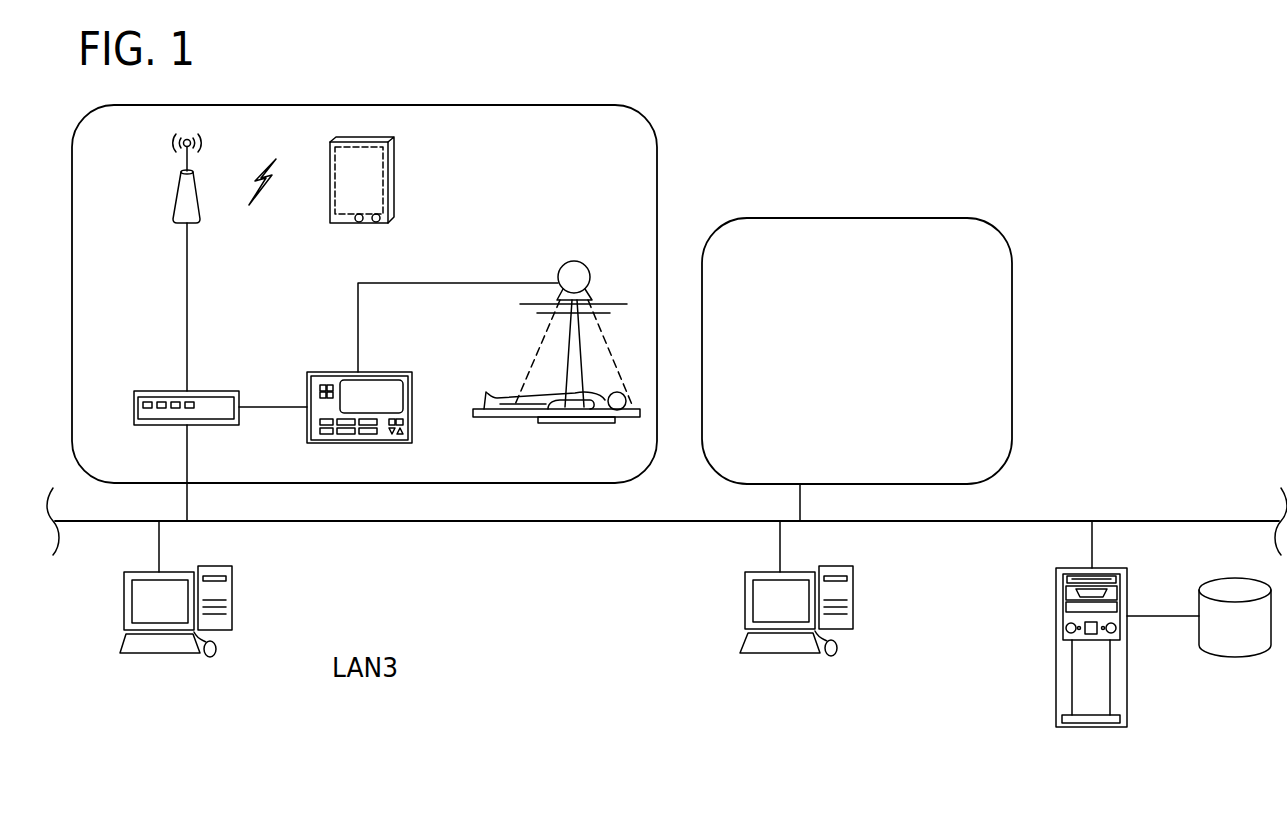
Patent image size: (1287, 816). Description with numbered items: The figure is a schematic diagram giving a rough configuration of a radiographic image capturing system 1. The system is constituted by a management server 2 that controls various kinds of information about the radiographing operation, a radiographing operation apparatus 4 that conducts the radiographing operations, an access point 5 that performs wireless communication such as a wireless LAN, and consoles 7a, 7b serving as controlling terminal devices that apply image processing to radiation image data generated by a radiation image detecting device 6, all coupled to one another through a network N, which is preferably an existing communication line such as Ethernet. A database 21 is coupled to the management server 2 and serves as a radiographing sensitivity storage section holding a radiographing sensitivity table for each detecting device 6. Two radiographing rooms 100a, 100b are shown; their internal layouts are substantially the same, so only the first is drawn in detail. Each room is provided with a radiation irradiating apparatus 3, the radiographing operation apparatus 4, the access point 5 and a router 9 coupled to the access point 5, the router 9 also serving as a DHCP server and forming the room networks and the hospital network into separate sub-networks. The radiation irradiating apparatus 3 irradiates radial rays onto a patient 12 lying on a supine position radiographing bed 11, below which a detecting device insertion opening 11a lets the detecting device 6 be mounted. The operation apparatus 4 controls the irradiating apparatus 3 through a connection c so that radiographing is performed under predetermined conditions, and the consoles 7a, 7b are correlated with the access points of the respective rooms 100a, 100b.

The radiographic image capturing system 1 is at (1112, 191).
The management server 2 is at (1056, 650).
The database 21 is at (1225, 657).
The radiation irradiating apparatus 3 is at (584, 268).
The radiographing operation apparatus 4 is at (330, 372).
The access point 5 is at (173, 197).
The radiation image detecting device 6 is at (394, 156).
The console 7a is at (124, 600).
The console 7b is at (745, 602).
The router 9 is at (153, 391).
The supine position radiographing bed 11 is at (487, 420).
The detecting device insertion opening 11a is at (592, 425).
The patient 12 is at (533, 406).
The radiographing room 100a is at (657, 152).
The radiographing room 100b is at (1012, 265).
The network N is at (450, 522).
The cable c is at (460, 283).